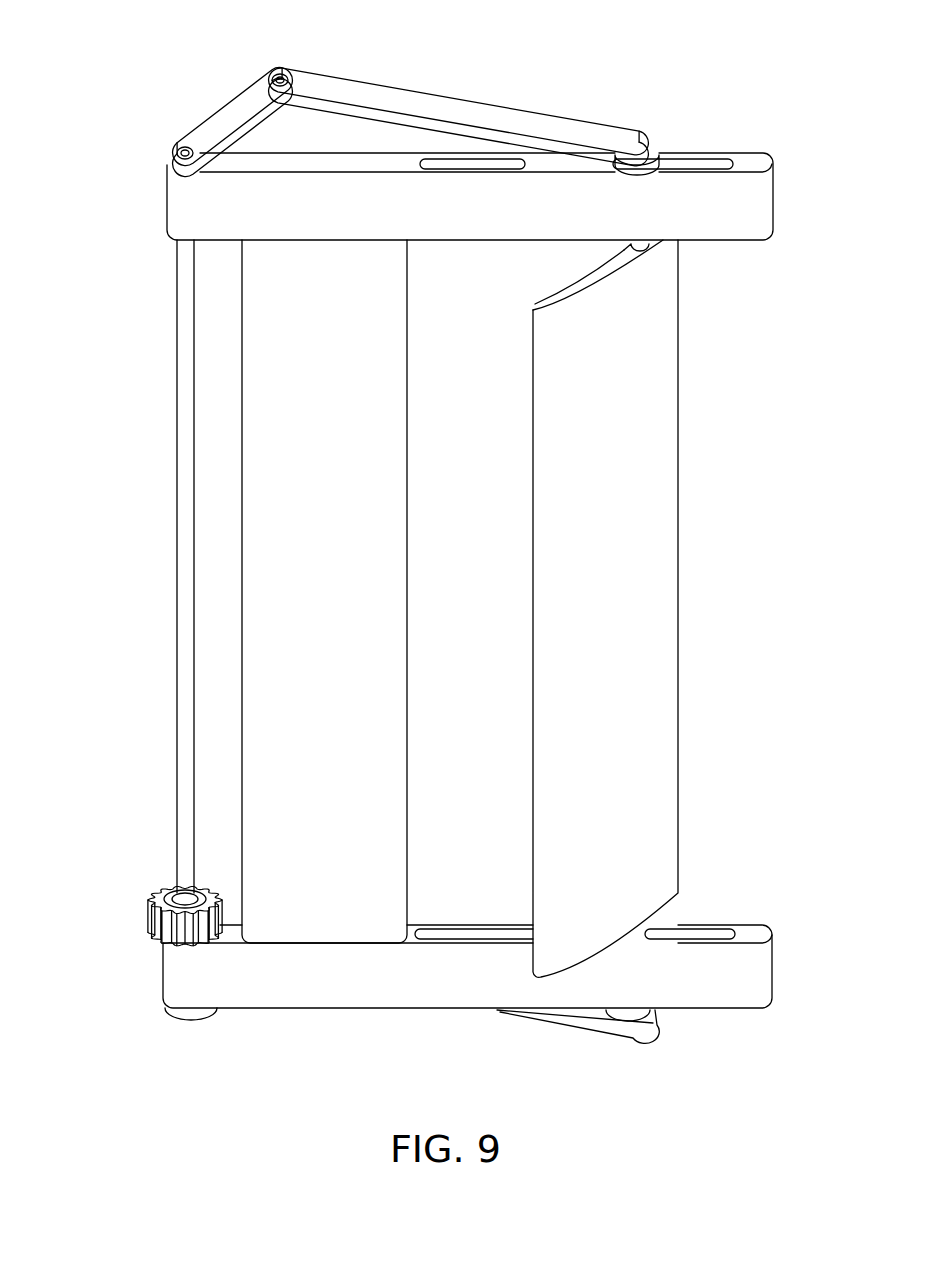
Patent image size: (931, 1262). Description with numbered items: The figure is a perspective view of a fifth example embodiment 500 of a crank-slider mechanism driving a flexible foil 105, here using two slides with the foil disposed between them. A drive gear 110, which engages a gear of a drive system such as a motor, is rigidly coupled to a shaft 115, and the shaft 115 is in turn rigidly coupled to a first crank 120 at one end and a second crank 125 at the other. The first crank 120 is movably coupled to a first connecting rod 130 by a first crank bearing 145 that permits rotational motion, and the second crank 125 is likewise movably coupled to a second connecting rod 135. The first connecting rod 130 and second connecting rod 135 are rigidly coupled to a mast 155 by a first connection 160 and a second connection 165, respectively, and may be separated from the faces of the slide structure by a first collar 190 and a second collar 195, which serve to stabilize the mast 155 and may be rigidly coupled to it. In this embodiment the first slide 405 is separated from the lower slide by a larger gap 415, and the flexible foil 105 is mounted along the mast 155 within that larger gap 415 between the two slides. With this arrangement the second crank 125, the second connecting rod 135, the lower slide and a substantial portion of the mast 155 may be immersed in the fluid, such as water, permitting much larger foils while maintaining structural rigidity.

The fifth example embodiment 500 is at (592, 68).
The first slide 405 is at (470, 162).
The second crank 125 is at (467, 998).
The shaft 115 is at (180, 575).
The drive gear 110 is at (152, 923).
The larger gap 415 is at (488, 541).
The flexible foil 105 is at (618, 608).
The mast 155 is at (600, 262).
The second connection 165 is at (650, 1022).
The first connection 160 is at (648, 152).
The first connecting rod 130 is at (405, 90).
The first crank bearing 145 is at (285, 72).
The first crank 120 is at (228, 123).
The second connecting rod 135 is at (534, 1013).
The first collar 190 is at (690, 158).
The second collar 195 is at (665, 1013).